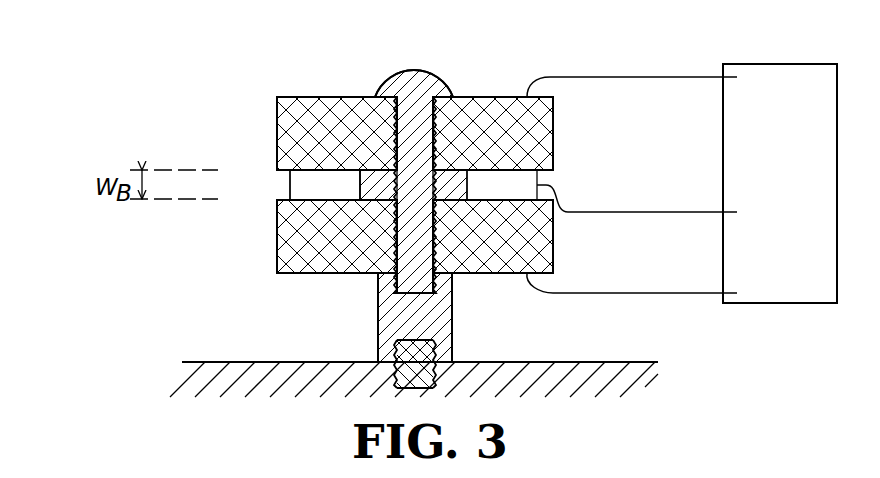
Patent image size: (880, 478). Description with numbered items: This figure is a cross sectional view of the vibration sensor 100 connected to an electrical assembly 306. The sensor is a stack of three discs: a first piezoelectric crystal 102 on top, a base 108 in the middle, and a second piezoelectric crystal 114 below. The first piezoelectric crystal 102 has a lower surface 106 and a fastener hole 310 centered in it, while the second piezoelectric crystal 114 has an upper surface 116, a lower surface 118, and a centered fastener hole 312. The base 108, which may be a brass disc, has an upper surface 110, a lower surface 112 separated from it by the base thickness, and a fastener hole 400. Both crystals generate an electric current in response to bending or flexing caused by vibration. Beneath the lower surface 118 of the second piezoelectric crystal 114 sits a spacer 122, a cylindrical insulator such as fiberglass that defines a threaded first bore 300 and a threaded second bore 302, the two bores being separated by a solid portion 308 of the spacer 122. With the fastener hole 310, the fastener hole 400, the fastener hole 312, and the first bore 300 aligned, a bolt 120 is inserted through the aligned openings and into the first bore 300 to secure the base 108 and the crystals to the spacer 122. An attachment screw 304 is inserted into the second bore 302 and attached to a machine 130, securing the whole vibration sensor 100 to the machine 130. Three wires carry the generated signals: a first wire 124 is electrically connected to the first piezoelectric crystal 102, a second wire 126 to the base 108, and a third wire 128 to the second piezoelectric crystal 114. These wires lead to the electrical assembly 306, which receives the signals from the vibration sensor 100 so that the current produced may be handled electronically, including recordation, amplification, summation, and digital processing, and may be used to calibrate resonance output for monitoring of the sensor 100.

The vibration sensor 100 is at (240, 40).
The first piezoelectric crystal 102 is at (277, 110).
The lower surface 106 is at (514, 158).
The base 108 is at (277, 192).
The upper surface 110 is at (300, 178).
The lower surface 112 is at (347, 193).
The second piezoelectric crystal 114 is at (290, 243).
The upper surface 116 is at (514, 208).
The lower surface 118 is at (293, 273).
The bolt 120 is at (417, 70).
The spacer 122 is at (452, 315).
The first wire 124 is at (590, 77).
The second wire 126 is at (637, 212).
The third wire 128 is at (612, 293).
The machine 130 is at (645, 401).
The first bore 300 is at (407, 296).
The second bore 302 is at (398, 342).
The attachment screw 304 is at (433, 375).
The electrical assembly 306 is at (797, 157).
The solid portion 308 is at (418, 322).
The fastener hole 310 is at (470, 127).
The fastener hole 312 is at (436, 232).
The fastener hole 400 is at (371, 95).